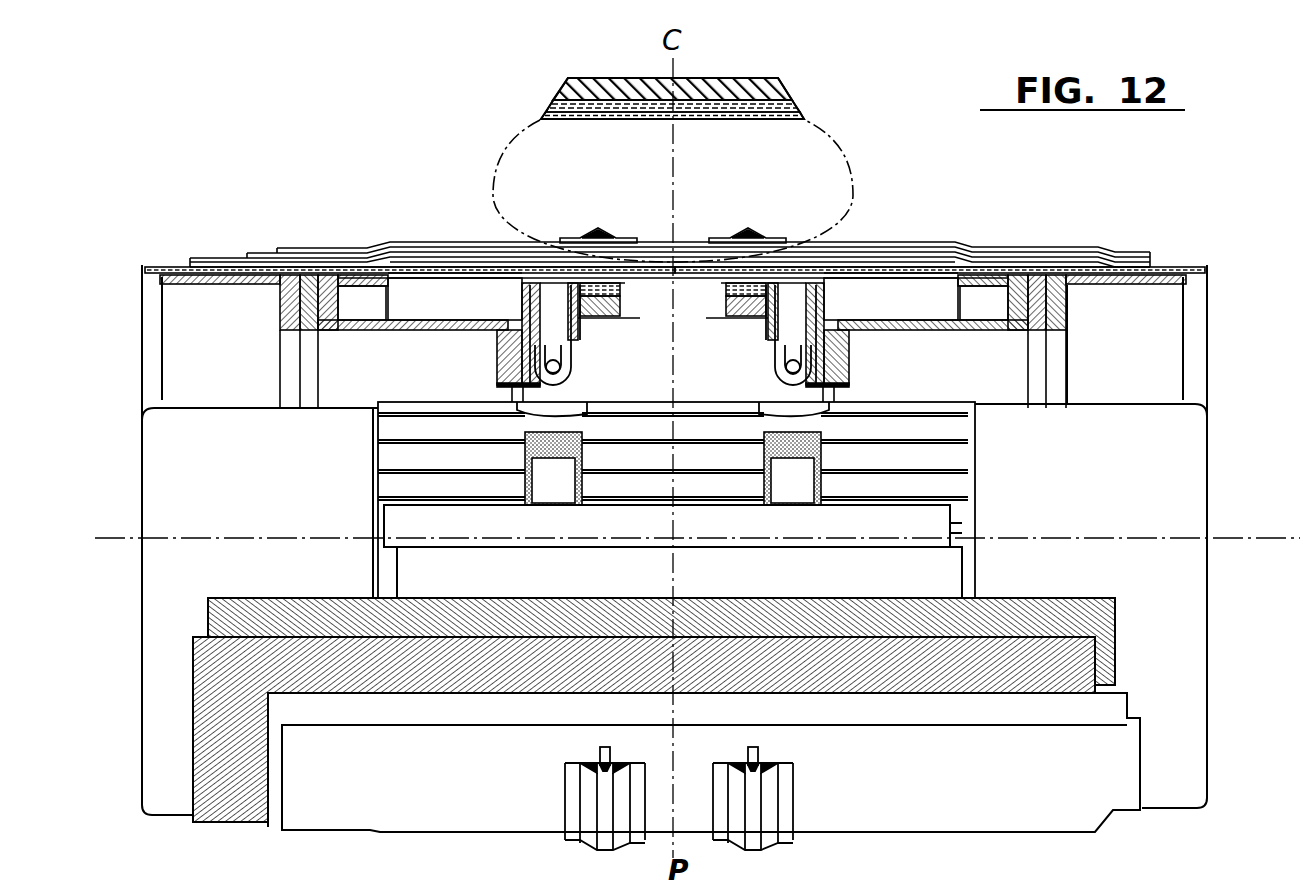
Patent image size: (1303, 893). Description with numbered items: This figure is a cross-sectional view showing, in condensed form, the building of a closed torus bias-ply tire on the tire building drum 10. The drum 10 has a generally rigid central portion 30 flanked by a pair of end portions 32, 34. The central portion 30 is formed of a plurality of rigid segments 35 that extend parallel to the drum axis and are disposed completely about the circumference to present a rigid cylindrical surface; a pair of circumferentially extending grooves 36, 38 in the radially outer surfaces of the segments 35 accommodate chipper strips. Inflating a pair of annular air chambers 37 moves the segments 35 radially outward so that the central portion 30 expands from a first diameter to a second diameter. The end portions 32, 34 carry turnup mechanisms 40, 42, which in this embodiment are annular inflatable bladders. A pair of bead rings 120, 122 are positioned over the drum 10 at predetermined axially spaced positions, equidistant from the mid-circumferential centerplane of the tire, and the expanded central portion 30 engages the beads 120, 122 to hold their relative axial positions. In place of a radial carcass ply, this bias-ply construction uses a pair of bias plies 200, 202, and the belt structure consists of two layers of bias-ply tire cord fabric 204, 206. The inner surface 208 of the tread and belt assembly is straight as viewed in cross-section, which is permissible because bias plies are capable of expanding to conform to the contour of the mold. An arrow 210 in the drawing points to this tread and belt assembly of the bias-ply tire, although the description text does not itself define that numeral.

The tire building drum 10 is at (1130, 326).
The central portion 30 is at (878, 260).
The end portion 32 is at (185, 285).
The end portion 34 is at (1160, 280).
The rigid segments 35 is at (468, 275).
The circumferentially extending groove 36 is at (520, 425).
The annular air chambers 37 is at (712, 292).
The circumferentially extending groove 38 is at (825, 422).
The turnup mechanism 40 is at (160, 265).
The turnup mechanism 42 is at (1200, 265).
The bead ring 120 is at (598, 230).
The bead ring 122 is at (748, 230).
The bias ply 200 is at (1097, 612).
The bias ply 202 is at (1077, 668).
The bias-ply tire cord fabric layer 204 is at (800, 113).
The bias-ply tire cord fabric layer 206 is at (785, 92).
The inner surface 208 is at (575, 113).
The plate assembly 210 is at (562, 82).